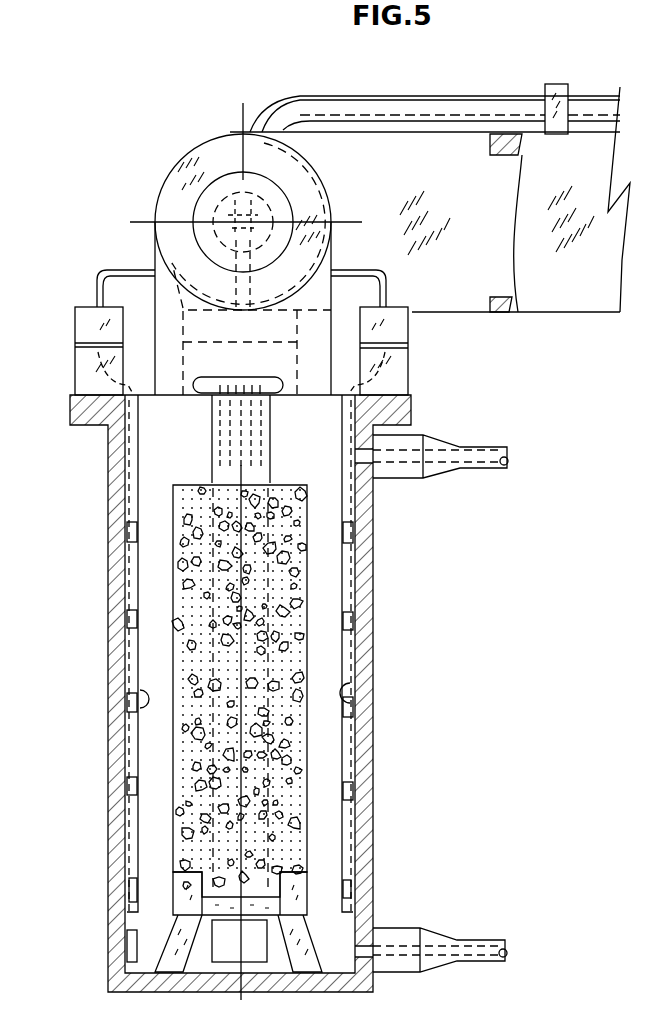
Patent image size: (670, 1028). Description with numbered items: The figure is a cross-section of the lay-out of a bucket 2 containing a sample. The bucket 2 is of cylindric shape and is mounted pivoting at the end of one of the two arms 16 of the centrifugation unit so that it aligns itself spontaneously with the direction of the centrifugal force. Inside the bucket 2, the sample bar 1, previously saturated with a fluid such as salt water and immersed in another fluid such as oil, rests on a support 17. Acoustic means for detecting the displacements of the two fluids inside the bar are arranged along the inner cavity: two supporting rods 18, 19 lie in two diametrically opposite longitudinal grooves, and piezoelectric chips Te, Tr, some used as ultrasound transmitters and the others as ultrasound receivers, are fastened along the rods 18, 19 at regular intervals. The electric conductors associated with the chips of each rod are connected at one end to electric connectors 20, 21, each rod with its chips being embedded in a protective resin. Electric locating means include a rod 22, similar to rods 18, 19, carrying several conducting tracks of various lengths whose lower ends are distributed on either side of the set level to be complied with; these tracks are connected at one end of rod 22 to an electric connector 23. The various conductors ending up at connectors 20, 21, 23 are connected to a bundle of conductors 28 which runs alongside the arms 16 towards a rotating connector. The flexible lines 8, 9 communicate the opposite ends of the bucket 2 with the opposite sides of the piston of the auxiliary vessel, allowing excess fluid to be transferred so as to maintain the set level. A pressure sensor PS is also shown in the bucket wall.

The sample bar 1 is at (168, 497).
The bucket 2 is at (98, 790).
The flexible line 8 is at (440, 933).
The flexible line 9 is at (445, 465).
The arm 16 is at (547, 300).
The support 17 is at (169, 950).
The supporting rod 18 is at (132, 590).
The supporting rod 19 is at (350, 590).
The electric connector 20 is at (68, 296).
The electric connector 21 is at (420, 356).
The rod 22 is at (278, 434).
The electric connector 23 is at (176, 303).
The bundle of conductors 28 is at (444, 108).
The piezoelectric chip Te is at (142, 690).
The piezoelectric chip Tr is at (350, 682).
The pressure sensor PS is at (126, 945).